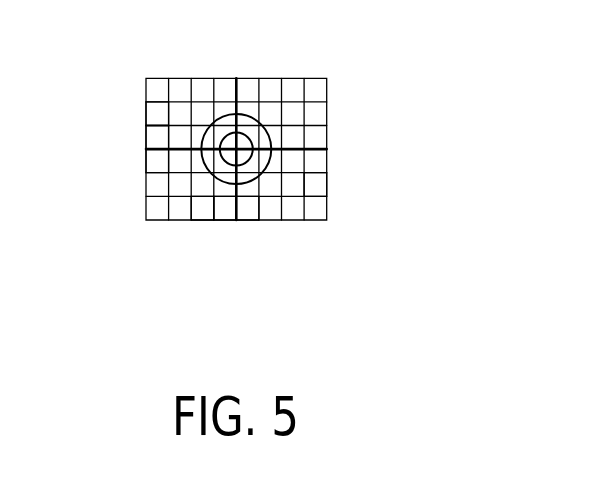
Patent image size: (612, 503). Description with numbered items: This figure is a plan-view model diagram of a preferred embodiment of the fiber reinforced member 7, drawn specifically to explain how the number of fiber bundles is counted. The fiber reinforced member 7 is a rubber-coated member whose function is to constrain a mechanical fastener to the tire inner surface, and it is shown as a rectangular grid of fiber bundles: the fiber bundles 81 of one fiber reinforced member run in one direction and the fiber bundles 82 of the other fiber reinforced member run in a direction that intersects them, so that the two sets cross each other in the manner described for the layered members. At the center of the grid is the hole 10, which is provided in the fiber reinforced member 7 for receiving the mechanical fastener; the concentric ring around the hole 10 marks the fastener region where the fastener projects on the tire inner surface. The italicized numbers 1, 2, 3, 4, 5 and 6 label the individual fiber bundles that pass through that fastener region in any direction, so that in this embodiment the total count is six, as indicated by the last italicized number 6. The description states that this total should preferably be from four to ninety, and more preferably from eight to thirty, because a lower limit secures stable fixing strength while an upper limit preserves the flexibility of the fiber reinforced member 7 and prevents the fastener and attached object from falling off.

The italicized count number 1 is at (148, 123).
The italicized count number 2 is at (147, 148).
The italicized count number 3 is at (147, 172).
The italicized count number 4 is at (212, 205).
The italicized count number 5 is at (230, 210).
The italicized count number 6 is at (257, 198).
The fiber reinforced member 7 is at (207, 78).
The hole 10 is at (273, 123).
The fiber bundles 81 is at (296, 102).
The fiber bundles 82 is at (307, 182).